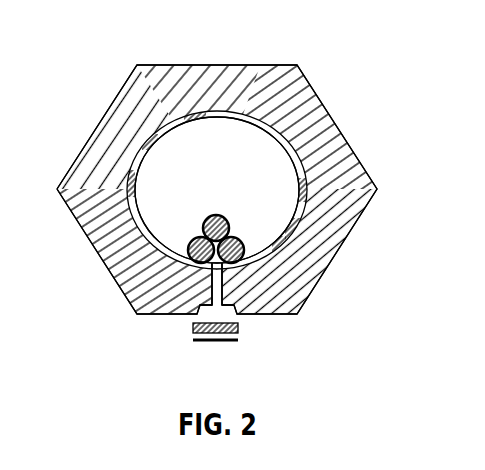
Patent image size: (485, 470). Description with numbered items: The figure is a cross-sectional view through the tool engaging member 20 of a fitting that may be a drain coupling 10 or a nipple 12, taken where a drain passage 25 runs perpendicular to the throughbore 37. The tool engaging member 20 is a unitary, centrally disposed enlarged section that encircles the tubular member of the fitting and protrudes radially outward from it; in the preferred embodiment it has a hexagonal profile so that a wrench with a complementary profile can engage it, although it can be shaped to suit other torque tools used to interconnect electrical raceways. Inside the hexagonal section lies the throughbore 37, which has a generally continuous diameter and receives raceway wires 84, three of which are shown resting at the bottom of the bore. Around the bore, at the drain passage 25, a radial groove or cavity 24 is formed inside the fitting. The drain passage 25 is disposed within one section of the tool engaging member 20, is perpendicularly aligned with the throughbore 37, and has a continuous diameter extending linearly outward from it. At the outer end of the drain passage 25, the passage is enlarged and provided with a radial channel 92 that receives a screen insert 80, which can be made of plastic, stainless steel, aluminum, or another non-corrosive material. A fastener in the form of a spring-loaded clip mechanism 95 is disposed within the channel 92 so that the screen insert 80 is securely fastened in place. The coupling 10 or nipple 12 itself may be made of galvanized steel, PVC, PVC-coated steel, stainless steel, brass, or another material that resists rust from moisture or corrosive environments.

The drain coupling 10 is at (156, 37).
The nipple 12 is at (217, 189).
The tool engaging member 20 is at (107, 113).
The radial groove or cavity 24 is at (278, 247).
The throughbore 37 is at (247, 157).
The raceway wires 84 is at (218, 207).
The drain passage 25 is at (213, 291).
The screen insert 80 is at (193, 330).
The radial channel 92 is at (239, 327).
The spring-loaded clip mechanism 95 is at (220, 342).